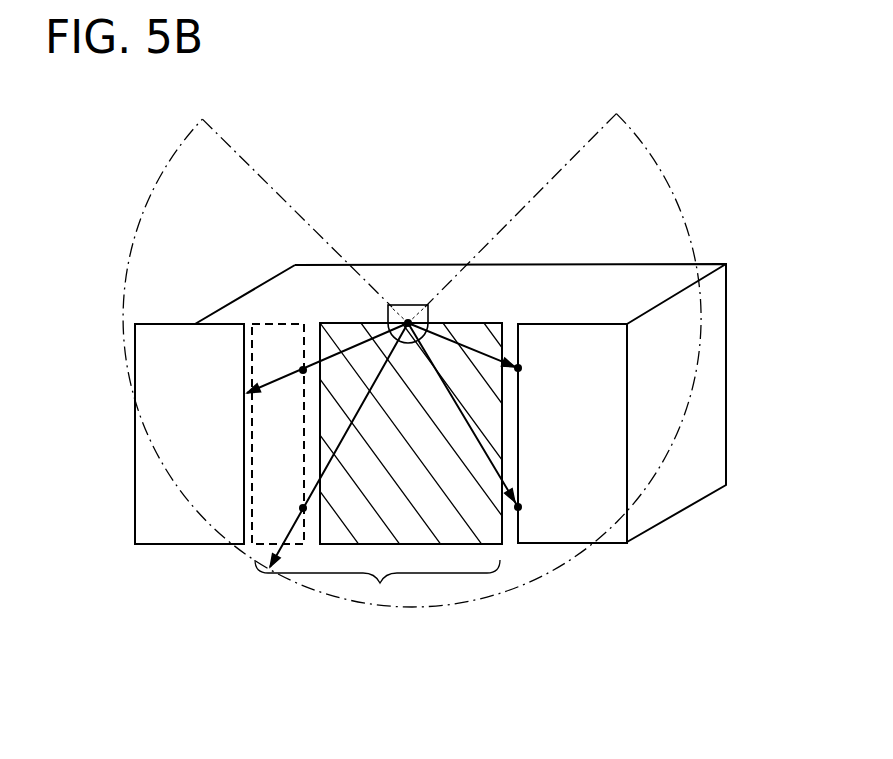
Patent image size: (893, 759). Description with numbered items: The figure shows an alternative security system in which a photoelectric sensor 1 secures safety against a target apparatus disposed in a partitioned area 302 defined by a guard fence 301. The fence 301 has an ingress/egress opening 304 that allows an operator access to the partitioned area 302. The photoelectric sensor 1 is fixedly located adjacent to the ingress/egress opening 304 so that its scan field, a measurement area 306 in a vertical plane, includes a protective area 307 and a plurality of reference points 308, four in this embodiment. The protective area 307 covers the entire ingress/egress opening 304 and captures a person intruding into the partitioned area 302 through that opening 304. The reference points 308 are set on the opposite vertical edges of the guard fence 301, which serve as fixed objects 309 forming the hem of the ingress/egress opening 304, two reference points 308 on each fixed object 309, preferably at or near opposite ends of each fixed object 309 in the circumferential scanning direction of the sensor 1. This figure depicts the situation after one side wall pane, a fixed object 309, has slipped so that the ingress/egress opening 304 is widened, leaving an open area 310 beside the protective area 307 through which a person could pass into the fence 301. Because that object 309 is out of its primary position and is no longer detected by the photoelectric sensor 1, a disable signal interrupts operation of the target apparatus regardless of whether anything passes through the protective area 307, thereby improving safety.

The photoelectric sensor 1 is at (412, 305).
The guard fence 301 is at (727, 312).
The partitioned area 302 is at (383, 282).
The ingress/egress opening 304 is at (380, 583).
The measurement area 306 is at (150, 203).
The protective area 307 is at (493, 520).
The reference points 308 is at (303, 508).
The fixed object 309 is at (183, 345).
The open area 310 is at (265, 503).